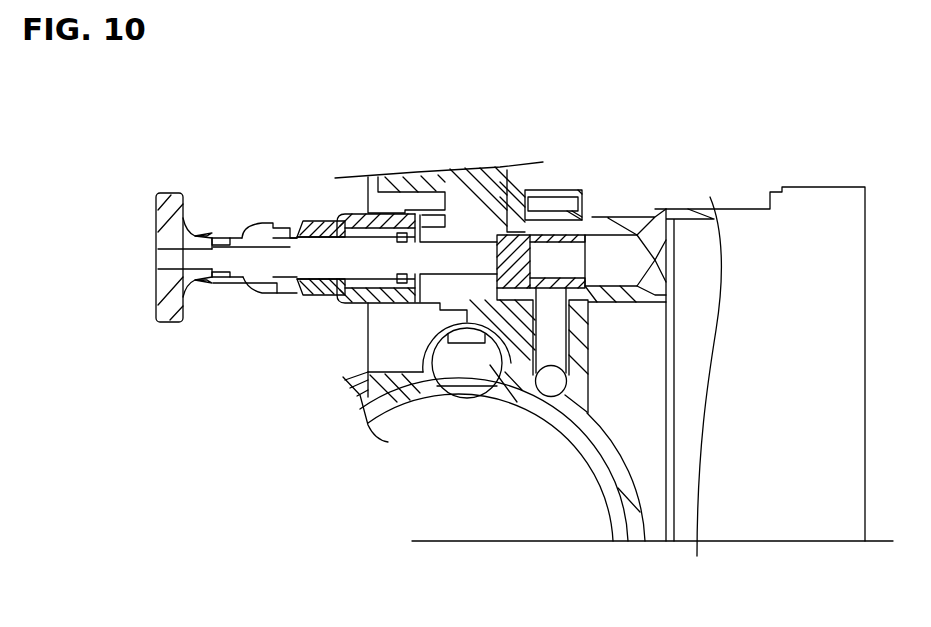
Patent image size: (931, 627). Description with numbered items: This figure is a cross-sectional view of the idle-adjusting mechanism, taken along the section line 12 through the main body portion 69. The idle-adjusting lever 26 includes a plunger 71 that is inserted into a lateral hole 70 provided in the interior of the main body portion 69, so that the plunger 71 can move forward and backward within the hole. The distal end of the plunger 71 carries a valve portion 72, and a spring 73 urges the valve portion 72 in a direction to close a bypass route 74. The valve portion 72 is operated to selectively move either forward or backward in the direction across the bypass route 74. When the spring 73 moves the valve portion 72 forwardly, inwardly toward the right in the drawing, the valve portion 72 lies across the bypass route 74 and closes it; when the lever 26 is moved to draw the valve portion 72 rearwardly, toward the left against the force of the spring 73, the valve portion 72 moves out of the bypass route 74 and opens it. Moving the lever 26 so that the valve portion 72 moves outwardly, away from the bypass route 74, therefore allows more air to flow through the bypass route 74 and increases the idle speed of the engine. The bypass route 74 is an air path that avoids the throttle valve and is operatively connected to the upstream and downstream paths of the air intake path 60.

The section line XII-XII 12 is at (495, 485).
The idle-adjusting lever 26 is at (175, 200).
The air intake path 60 is at (540, 525).
The main body portion 69 is at (627, 217).
The lateral hole 70 is at (433, 232).
The plunger 71 is at (263, 263).
The valve portion 72 is at (562, 192).
The spring 73 is at (320, 202).
The bypass route 74 is at (567, 342).